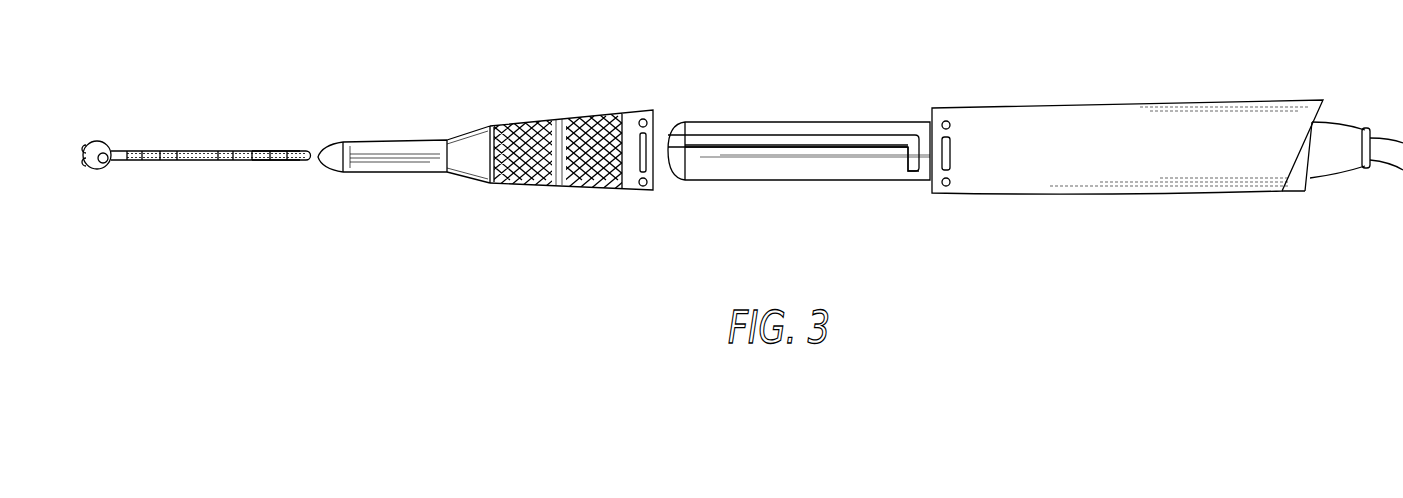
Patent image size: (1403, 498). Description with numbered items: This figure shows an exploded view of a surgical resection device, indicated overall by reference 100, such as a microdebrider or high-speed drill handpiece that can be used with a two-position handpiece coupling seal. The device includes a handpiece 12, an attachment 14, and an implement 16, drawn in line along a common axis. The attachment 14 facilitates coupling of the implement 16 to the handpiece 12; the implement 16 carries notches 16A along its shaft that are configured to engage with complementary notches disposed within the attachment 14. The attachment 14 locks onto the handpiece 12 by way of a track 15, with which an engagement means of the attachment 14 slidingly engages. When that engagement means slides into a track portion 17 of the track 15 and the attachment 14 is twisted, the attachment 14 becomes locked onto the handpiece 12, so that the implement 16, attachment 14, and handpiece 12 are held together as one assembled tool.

The surgical instrument assembly 100 is at (1115, 258).
The handpiece 12 is at (1128, 101).
The attachment 14 is at (540, 183).
The track 15 is at (850, 138).
The implement 16 is at (228, 162).
The notches 16A is at (274, 141).
The track portion 17 is at (909, 170).